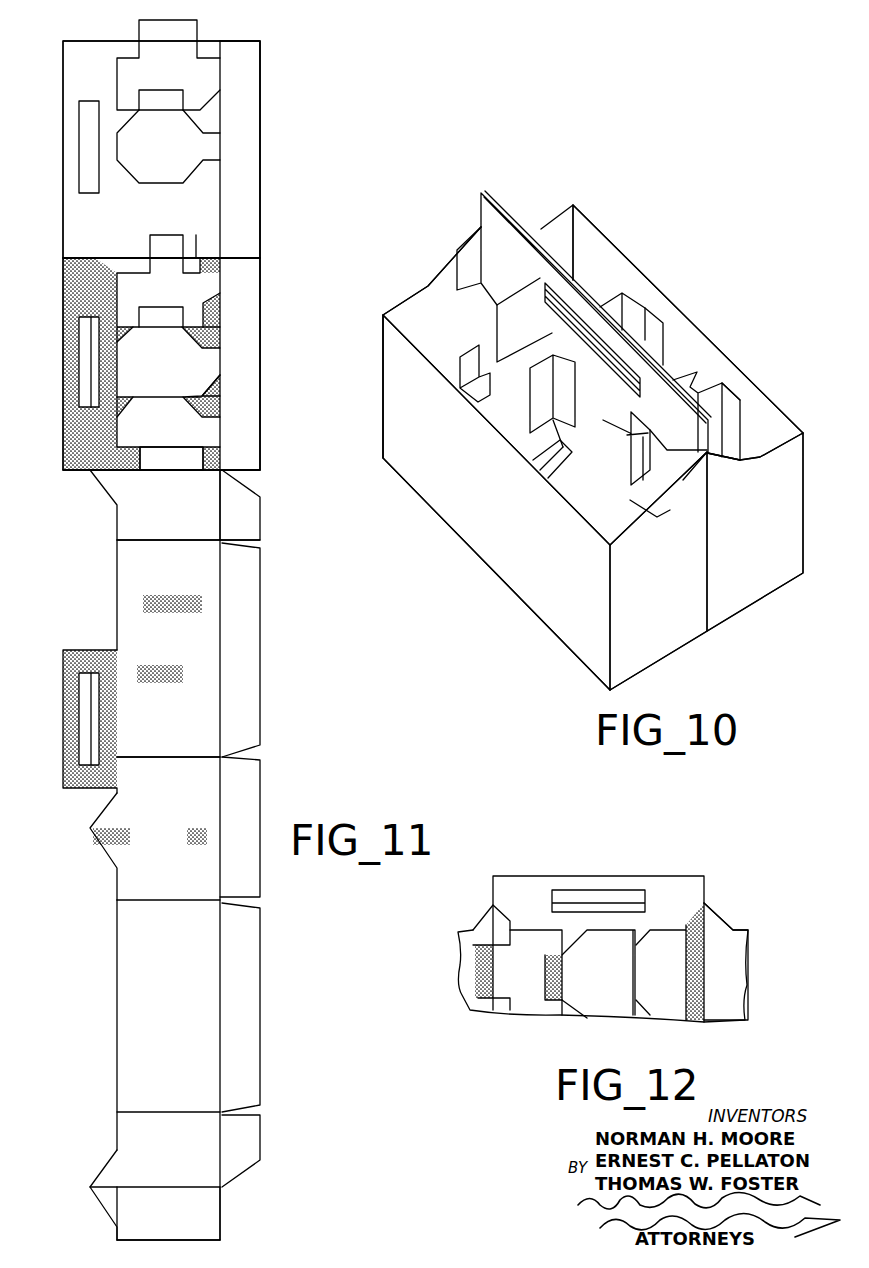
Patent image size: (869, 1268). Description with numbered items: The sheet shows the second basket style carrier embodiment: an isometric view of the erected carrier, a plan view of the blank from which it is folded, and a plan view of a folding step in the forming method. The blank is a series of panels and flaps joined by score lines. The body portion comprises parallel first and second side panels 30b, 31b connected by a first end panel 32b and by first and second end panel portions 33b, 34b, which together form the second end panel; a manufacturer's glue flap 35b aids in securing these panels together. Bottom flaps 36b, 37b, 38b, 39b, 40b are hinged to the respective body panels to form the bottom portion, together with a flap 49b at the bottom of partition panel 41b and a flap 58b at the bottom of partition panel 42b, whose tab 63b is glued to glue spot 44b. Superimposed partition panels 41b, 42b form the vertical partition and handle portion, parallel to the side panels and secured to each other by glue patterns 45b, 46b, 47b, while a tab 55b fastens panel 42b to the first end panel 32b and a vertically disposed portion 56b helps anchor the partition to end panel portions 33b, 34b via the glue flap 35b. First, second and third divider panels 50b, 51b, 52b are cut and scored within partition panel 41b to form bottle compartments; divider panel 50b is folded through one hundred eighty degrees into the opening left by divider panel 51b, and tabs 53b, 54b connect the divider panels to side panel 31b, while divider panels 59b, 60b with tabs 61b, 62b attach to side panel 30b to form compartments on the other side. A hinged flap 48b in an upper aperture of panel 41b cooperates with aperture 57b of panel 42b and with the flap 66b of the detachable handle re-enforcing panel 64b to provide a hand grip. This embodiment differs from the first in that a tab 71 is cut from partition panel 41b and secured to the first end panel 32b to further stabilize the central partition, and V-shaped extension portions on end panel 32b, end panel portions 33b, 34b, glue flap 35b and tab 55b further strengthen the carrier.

In FIG. 11, the first side panel 30b is at (184, 1009).
In FIG. 10, the first side panel 30b is at (504, 472).
In FIG. 11, the second side panel 31b is at (186, 737).
In FIG. 10, the second side panel 31b is at (612, 256).
In FIG. 11, the first end panel 32b is at (182, 812).
In FIG. 10, the first end panel 32b is at (452, 326).
In FIG. 11, the first end panel portion 33b is at (184, 1159).
In FIG. 10, the first end panel portion 33b is at (682, 589).
In FIG. 11, the second end panel portion 34b is at (186, 514).
In FIG. 10, the second end panel portion 34b is at (787, 529).
In FIG. 12, the second end panel portion 34b is at (735, 963).
In FIG. 11, the glue flap 35b is at (184, 1224).
In FIG. 10, the glue flap 35b is at (689, 467).
In FIG. 11, the bottom flap 36b is at (250, 977).
In FIG. 11, the bottom flap 37b is at (252, 623).
In FIG. 11, the bottom flap 38b is at (250, 800).
In FIG. 11, the bottom flap 39b is at (250, 1143).
In FIG. 11, the bottom flap 40b is at (250, 526).
In FIG. 11, the partition panel 41b is at (268, 324).
In FIG. 10, the partition panel 41b is at (539, 249).
In FIG. 12, the partition panel 41b is at (689, 904).
In FIG. 11, the partition panel 42b is at (70, 38).
In FIG. 10, the partition panel 42b is at (539, 326).
In FIG. 11, the glue spot 44b is at (225, 466).
In FIG. 11, the glue pattern 45b is at (215, 394).
In FIG. 11, the glue pattern 46b is at (222, 310).
In FIG. 11, the glue pattern 47b is at (222, 258).
In FIG. 11, the flap 48b is at (83, 352).
In FIG. 10, the flap 48b is at (630, 372).
In FIG. 11, the flap 49b is at (250, 368).
In FIG. 11, the first divider panel 50b is at (182, 429).
In FIG. 10, the first divider panel 50b is at (614, 402).
In FIG. 12, the first divider panel 50b is at (692, 974).
In FIG. 11, the second divider panel 51b is at (182, 384).
In FIG. 10, the second divider panel 51b is at (609, 472).
In FIG. 12, the second divider panel 51b is at (632, 974).
In FIG. 11, the third divider panel 52b is at (184, 296).
In FIG. 10, the third divider panel 52b is at (526, 402).
In FIG. 12, the third divider panel 52b is at (549, 974).
In FIG. 11, the tab 53b is at (172, 324).
In FIG. 12, the tab 53b is at (553, 1000).
In FIG. 11, the tab 54b is at (165, 237).
In FIG. 12, the tab 54b is at (483, 965).
In FIG. 11, the tab 55b is at (124, 258).
In FIG. 10, the tab 55b is at (468, 257).
In FIG. 11, the vertically disposed portion 56b is at (193, 456).
In FIG. 11, the aperture 57b is at (80, 131).
In FIG. 11, the flap 58b is at (250, 151).
In FIG. 11, the divider panel 59b is at (182, 159).
In FIG. 10, the divider panel 59b is at (620, 292).
In FIG. 11, the divider panel 60b is at (186, 72).
In FIG. 10, the divider panel 60b is at (690, 385).
In FIG. 11, the tab 61b is at (155, 100).
In FIG. 10, the tab 61b is at (655, 318).
In FIG. 11, the tab 62b is at (146, 28).
In FIG. 10, the tab 62b is at (732, 405).
In FIG. 11, the tab 63b is at (207, 50).
In FIG. 11, the handle re-enforcing panel 64b is at (63, 652).
In FIG. 11, the flap 66b is at (85, 744).
In FIG. 11, the tab 71 is at (196, 236).
In FIG. 10, the tab 71 is at (470, 370).